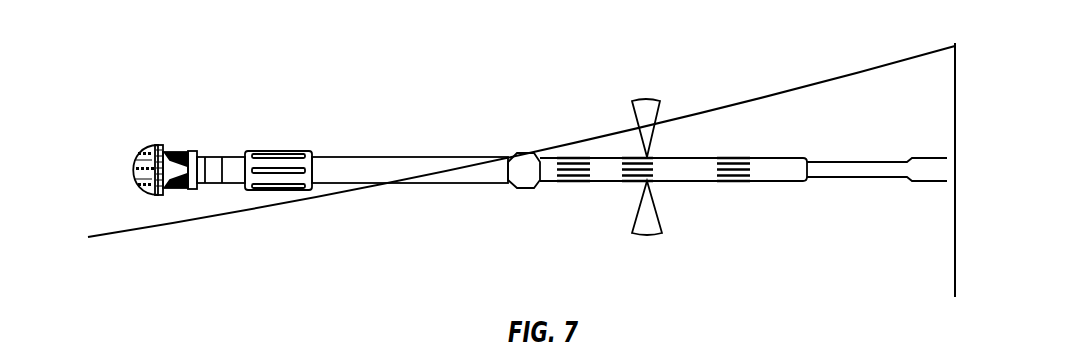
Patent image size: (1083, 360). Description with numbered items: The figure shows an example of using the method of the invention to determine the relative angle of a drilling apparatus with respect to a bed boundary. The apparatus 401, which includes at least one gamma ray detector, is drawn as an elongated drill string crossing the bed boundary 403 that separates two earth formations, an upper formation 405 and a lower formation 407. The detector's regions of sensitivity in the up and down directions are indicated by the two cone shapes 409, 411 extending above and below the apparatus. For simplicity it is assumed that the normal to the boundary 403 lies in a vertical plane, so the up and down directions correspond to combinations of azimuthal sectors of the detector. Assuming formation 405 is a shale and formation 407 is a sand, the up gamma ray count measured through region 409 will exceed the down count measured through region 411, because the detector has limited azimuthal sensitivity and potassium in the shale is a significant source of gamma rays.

The apparatus 401 is at (260, 130).
The bed boundary 403 is at (854, 75).
The formation 405 is at (672, 42).
The formation 407 is at (778, 266).
The region of sensitivity in the up direction 409 is at (633, 112).
The region of sensitivity in the down direction 411 is at (633, 222).